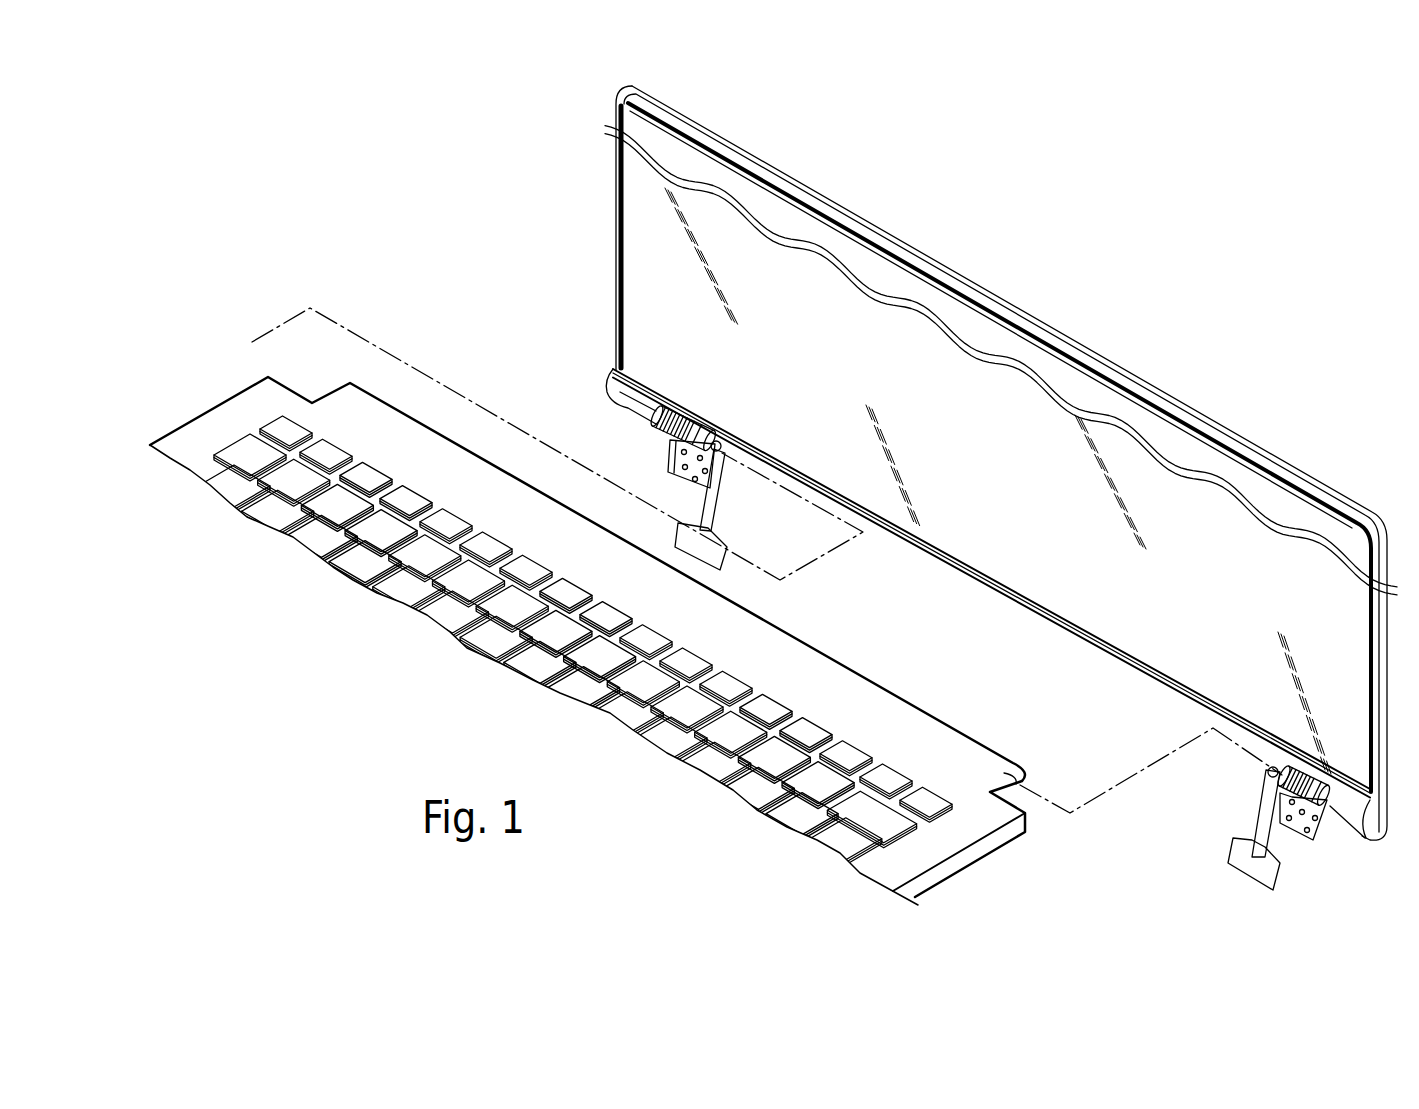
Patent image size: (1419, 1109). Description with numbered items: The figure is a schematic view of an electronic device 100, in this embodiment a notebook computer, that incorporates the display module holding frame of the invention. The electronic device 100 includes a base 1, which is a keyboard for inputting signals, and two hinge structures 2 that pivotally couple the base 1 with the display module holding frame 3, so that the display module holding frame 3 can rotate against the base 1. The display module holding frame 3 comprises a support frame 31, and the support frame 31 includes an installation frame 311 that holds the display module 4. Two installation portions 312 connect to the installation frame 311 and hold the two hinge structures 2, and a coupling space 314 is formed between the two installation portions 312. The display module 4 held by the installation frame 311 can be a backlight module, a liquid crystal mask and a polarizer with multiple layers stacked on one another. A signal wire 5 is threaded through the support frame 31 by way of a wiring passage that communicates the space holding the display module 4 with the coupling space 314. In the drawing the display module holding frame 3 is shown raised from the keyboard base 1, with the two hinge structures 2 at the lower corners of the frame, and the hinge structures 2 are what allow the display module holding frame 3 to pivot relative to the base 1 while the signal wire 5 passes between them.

The electronic device 100 is at (455, 187).
The base 1 is at (399, 404).
The hinge structure 2 is at (1276, 806).
The display module holding frame 3 is at (944, 264).
The support frame 31 is at (542, 294).
The installation frame 311 is at (616, 320).
The installation portion 312 is at (612, 380).
The coupling space 314 is at (1010, 622).
The display module 4 is at (1144, 470).
The signal wire 5 is at (736, 561).